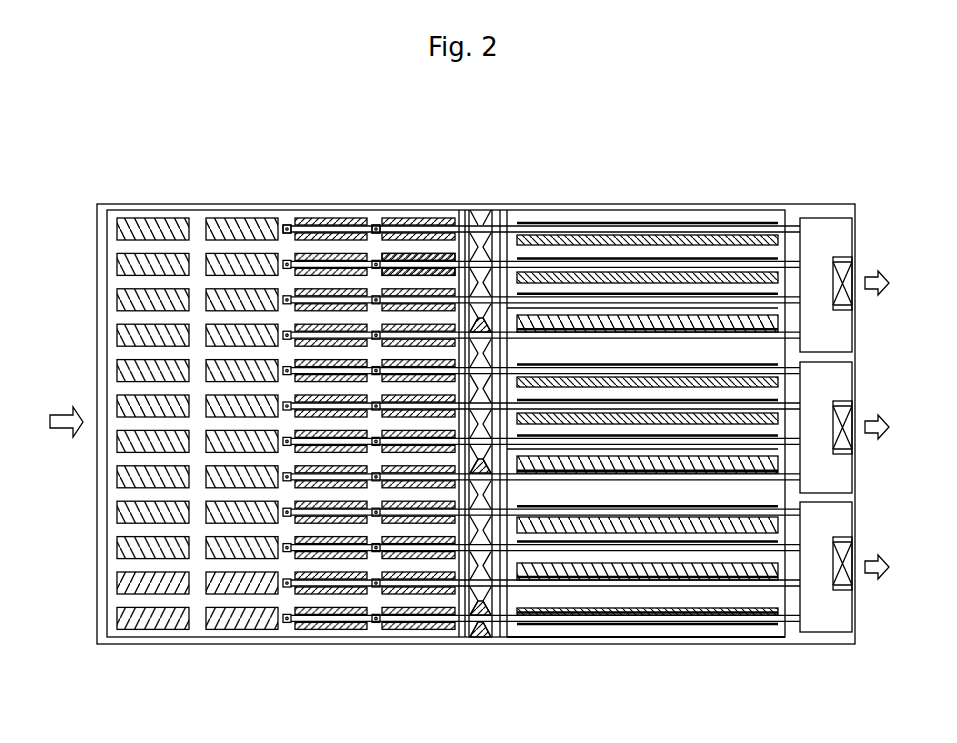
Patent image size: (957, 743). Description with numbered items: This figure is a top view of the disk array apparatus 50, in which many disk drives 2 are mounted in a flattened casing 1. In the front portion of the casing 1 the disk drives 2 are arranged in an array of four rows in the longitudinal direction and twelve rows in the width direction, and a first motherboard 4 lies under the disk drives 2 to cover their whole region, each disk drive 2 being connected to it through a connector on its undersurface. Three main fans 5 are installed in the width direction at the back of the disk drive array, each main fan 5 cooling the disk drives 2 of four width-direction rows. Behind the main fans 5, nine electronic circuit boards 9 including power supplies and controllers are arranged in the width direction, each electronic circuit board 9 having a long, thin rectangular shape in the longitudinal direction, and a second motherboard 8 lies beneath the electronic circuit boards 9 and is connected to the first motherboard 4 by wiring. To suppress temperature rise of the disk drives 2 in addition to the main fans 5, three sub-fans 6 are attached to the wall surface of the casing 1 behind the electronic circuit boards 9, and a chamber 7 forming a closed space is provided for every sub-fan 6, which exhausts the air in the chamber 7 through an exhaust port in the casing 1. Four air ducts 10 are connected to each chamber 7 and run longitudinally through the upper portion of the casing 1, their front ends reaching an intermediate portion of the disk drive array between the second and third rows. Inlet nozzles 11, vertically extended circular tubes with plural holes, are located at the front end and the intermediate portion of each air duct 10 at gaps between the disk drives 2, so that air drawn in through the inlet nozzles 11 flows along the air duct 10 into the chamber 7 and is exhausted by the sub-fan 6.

The disk array apparatus 50 is at (705, 198).
The casing 1 is at (330, 640).
The disk drive 2 is at (250, 620).
The first motherboard 4 is at (203, 625).
The main fan 5 is at (478, 630).
The sub-fan 6 is at (843, 256).
The chamber 7 is at (810, 240).
The second motherboard 8 is at (636, 634).
The electronic circuit board 9 is at (567, 318).
The air duct 10 is at (418, 262).
The inlet nozzle 11 is at (288, 227).